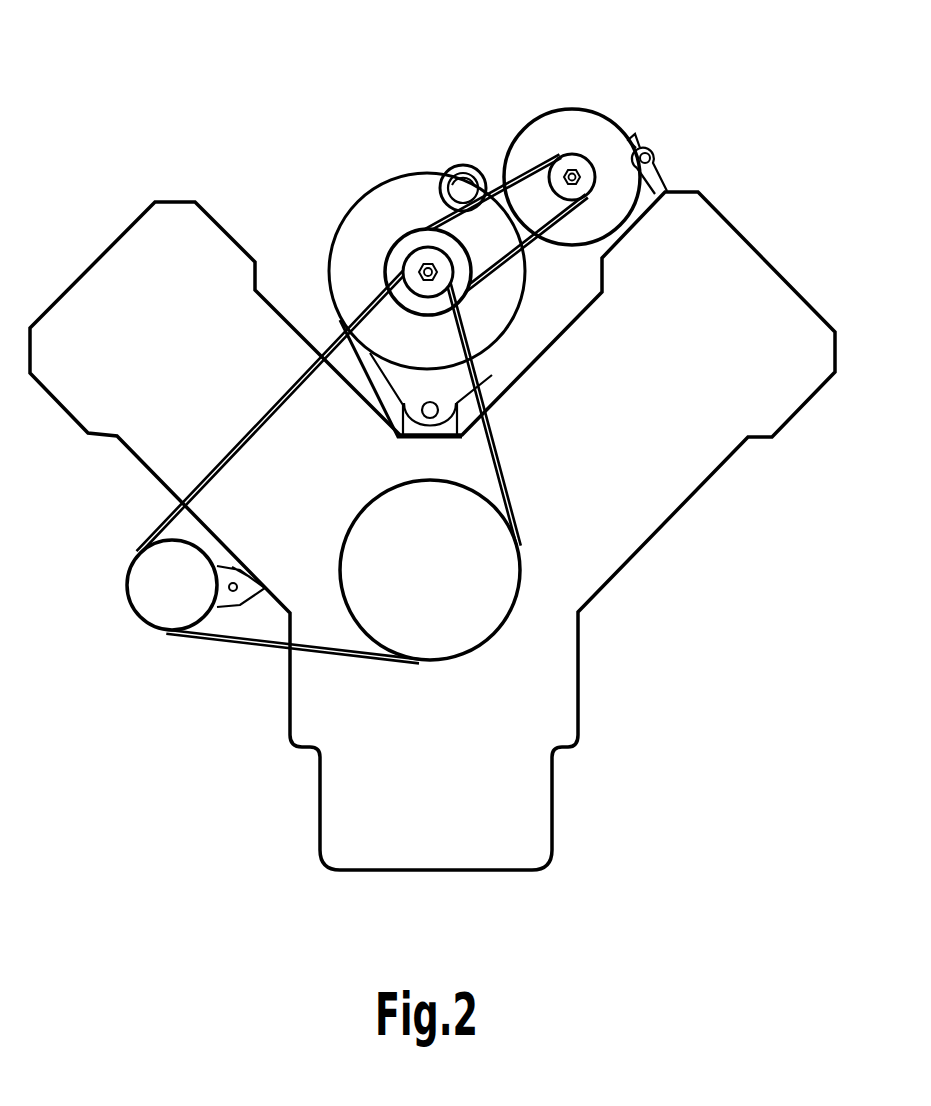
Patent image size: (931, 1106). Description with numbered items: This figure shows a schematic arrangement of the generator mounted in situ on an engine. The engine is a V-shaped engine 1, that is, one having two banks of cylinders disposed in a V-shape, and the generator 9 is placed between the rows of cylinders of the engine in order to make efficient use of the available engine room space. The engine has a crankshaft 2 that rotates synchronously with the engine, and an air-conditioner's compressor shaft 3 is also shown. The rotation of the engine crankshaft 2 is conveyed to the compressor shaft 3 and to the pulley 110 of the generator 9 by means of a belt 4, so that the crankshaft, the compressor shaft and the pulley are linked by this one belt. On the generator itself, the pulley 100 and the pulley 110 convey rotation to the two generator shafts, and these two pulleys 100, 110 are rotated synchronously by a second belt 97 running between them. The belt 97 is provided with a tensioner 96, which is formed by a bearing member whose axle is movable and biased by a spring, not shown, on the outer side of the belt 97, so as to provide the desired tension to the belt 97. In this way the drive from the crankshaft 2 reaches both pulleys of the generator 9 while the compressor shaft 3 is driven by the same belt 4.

The V-shaped engine 1 is at (540, 805).
The crankshaft 2 is at (495, 612).
The compressor shaft 3 is at (150, 612).
The belt 4 is at (340, 338).
The generator 9 is at (596, 116).
The tensioner 96 is at (447, 167).
The belt 97 is at (520, 165).
The pulley 100 is at (580, 168).
The pulley 110 is at (395, 250).